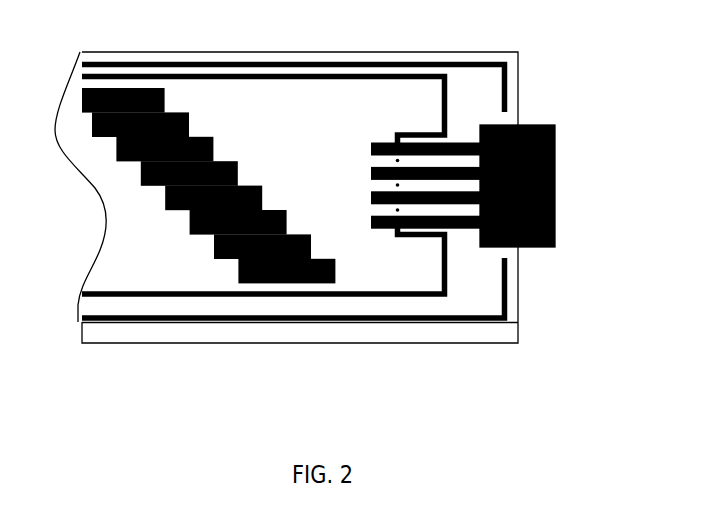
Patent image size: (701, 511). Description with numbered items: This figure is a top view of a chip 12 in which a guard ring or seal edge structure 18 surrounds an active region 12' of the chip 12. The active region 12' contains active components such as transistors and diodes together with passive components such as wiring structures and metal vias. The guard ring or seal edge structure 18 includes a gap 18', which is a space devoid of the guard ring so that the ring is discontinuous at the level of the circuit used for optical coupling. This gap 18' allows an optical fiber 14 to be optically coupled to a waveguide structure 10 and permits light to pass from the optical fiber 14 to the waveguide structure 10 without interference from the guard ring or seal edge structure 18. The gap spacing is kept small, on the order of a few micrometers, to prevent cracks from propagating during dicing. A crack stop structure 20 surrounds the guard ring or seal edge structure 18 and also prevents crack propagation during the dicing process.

The waveguide structure 10 is at (457, 228).
The chip 12 is at (286, 222).
The active region 12' is at (178, 185).
The optical fiber 14 is at (546, 248).
The guard ring or seal edge structure 18 is at (293, 165).
The gap 18' is at (263, 153).
The crack stop structure 20 is at (245, 323).